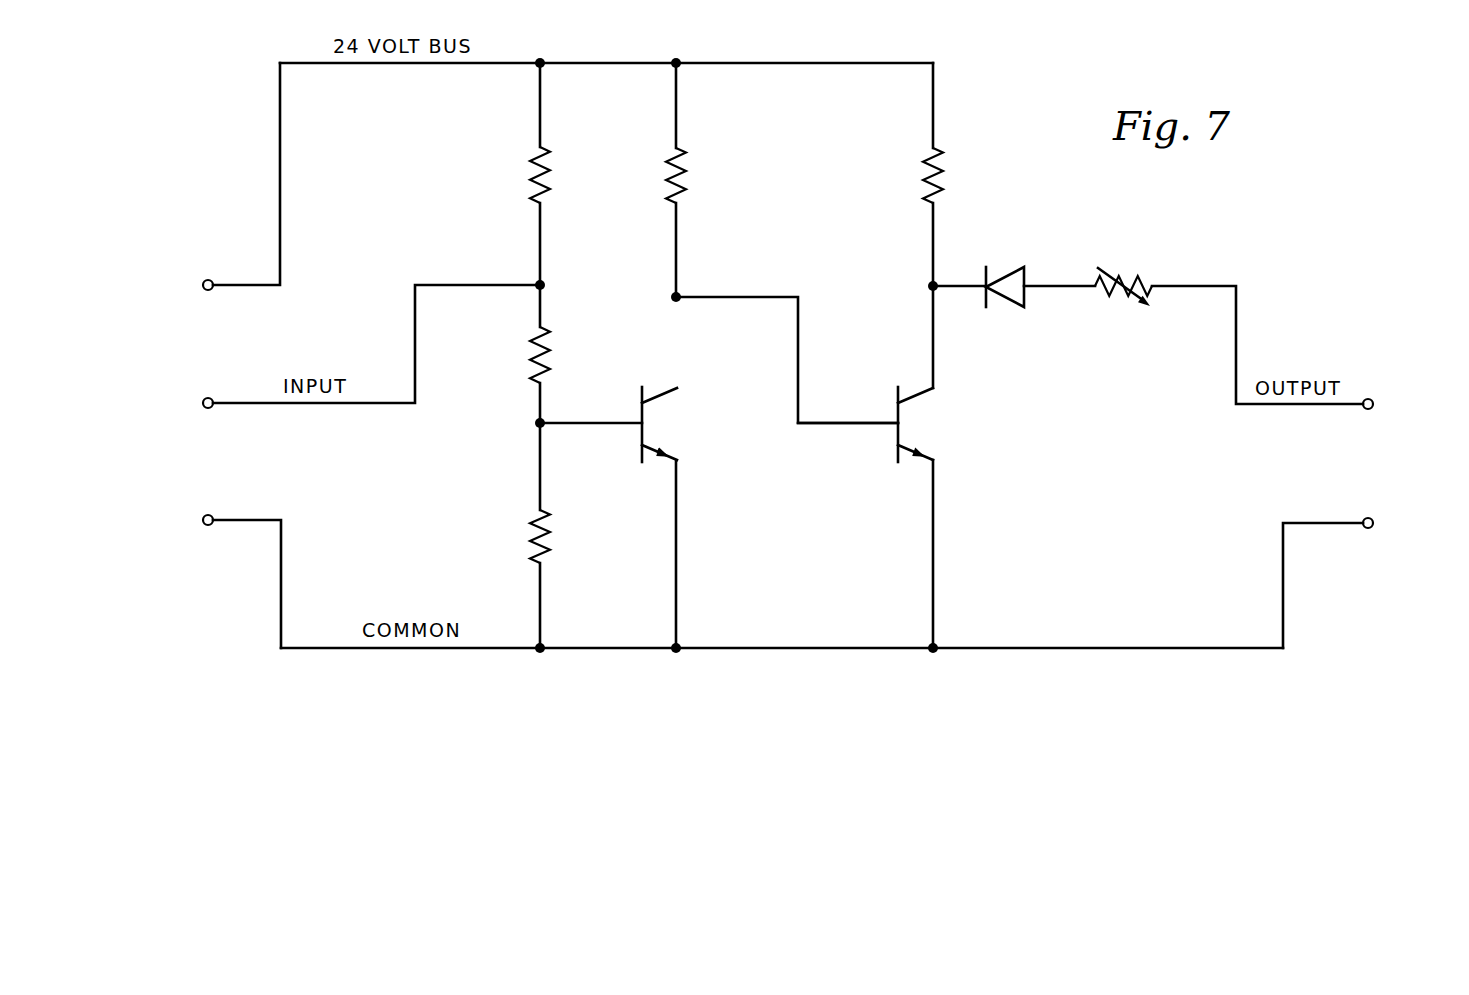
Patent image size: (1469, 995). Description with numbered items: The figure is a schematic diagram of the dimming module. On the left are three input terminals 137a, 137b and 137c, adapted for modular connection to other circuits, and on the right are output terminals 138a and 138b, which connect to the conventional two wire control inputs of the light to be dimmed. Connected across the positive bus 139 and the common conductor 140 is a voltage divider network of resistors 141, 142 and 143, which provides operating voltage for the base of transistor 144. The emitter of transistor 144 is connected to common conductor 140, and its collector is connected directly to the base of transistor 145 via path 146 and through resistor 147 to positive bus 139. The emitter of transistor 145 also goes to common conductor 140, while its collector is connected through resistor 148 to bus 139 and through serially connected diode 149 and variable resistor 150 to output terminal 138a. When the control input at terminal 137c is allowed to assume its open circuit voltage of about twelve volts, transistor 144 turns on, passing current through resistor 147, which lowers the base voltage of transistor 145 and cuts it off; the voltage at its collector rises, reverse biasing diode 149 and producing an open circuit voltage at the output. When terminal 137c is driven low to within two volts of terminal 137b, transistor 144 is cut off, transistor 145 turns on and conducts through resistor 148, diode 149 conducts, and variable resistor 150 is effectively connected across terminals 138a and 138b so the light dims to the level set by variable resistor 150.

The input terminal 137a is at (203, 282).
The input terminal 137b is at (203, 517).
The input terminal 137c is at (203, 400).
The output terminal 138a is at (1373, 400).
The output terminal 138b is at (1373, 519).
The positive bus 139 is at (633, 62).
The common conductor 140 is at (633, 649).
The resistor 141 is at (538, 150).
The resistor 142 is at (538, 329).
The resistor 143 is at (538, 511).
The transistor 144 is at (680, 425).
The transistor 145 is at (936, 425).
The path 146 is at (733, 297).
The resistor 147 is at (674, 150).
The resistor 148 is at (931, 150).
The diode 149 is at (1024, 271).
The variable resistor 150 is at (1147, 283).